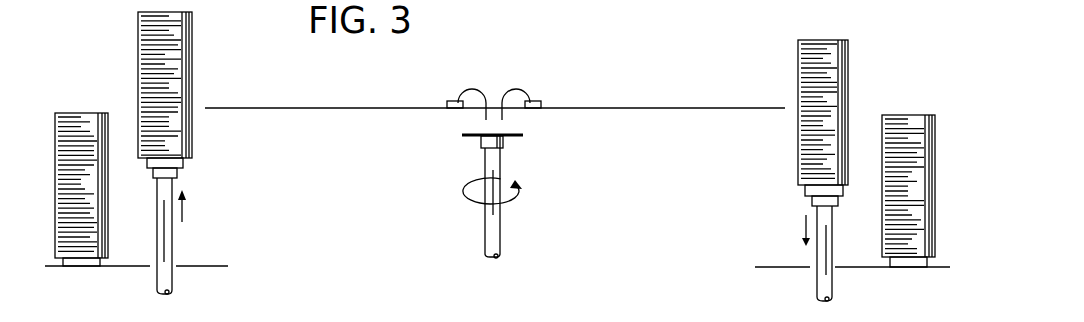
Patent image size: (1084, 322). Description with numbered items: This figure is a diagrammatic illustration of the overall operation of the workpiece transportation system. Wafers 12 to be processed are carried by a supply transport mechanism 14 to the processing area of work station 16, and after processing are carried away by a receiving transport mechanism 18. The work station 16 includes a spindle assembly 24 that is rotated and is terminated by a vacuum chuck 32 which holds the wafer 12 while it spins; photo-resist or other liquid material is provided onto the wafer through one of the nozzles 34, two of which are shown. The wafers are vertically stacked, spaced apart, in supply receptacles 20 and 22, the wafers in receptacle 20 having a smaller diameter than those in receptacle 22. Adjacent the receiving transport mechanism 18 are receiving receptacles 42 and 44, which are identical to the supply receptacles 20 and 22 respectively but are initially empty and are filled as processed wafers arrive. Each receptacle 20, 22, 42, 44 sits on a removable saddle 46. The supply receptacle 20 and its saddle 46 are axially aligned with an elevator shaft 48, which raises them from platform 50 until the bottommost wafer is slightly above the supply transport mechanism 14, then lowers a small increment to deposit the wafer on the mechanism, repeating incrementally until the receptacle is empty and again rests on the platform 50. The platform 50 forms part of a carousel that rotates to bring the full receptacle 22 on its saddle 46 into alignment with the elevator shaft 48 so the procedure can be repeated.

The wafer 12 is at (523, 135).
The supply transport mechanism 14 is at (703, 103).
The work station 16 is at (492, 80).
The receiving transport mechanism 18 is at (315, 103).
The supply receptacle 20 is at (797, 75).
The supply receptacle 22 is at (933, 128).
The spindle assembly 24 is at (500, 236).
The vacuum chuck 32 is at (508, 143).
The nozzles 34 is at (463, 92).
The receiving receptacle 42 is at (193, 82).
The receiving receptacle 44 is at (55, 113).
The removable saddle 46 is at (183, 163).
The elevator shaft 48 is at (172, 238).
The platform 50 is at (183, 268).